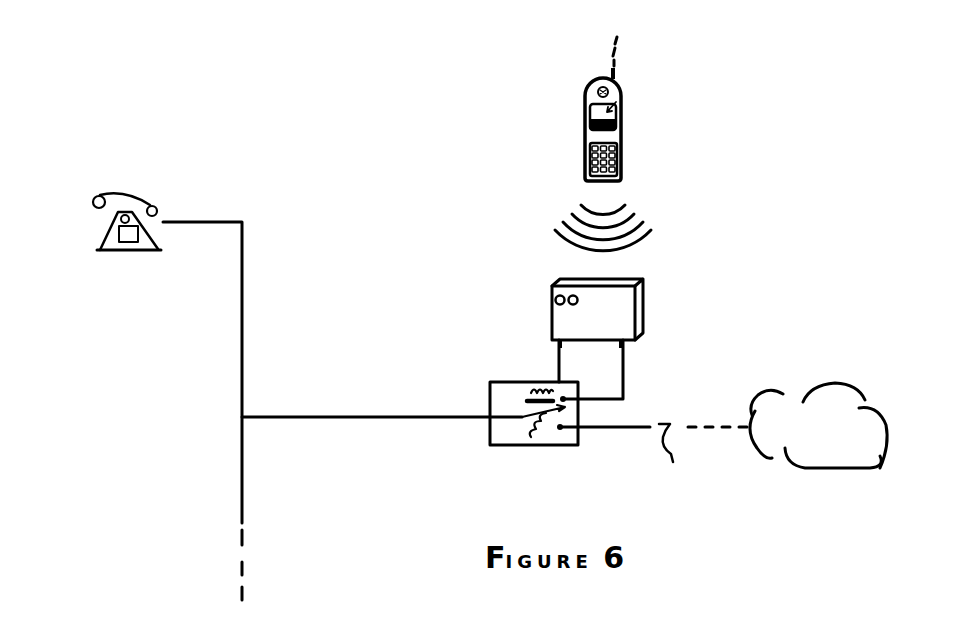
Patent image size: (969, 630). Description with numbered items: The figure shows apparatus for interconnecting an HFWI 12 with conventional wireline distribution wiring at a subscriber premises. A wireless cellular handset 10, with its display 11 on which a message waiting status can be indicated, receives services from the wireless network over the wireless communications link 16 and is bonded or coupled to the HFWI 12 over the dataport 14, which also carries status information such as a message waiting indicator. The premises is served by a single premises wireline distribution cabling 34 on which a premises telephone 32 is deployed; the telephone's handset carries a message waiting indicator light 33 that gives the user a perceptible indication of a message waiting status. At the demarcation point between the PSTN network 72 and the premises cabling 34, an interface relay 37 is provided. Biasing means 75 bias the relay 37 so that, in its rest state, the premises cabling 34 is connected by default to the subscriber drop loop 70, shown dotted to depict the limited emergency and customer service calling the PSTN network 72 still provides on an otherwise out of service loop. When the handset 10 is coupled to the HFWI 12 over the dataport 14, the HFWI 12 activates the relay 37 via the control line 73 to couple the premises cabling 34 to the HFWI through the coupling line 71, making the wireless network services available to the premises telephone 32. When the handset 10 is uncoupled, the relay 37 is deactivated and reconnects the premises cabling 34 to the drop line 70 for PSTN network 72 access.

The handset 10 is at (583, 107).
The display 11 is at (618, 103).
The wireless communications link 16 is at (613, 44).
The dataport 14 is at (655, 218).
The HFWI 12 is at (645, 305).
The interface relay 37 is at (513, 382).
The control line 73 is at (562, 363).
The coupling line 71 is at (626, 367).
The biasing means 75 is at (527, 429).
The subscriber drop loop 70 is at (652, 458).
The PSTN network 72 is at (820, 472).
The premises telephone 32 is at (115, 255).
The message waiting indicator light 33 is at (103, 222).
The premises wireline distribution cabling 34 is at (242, 365).